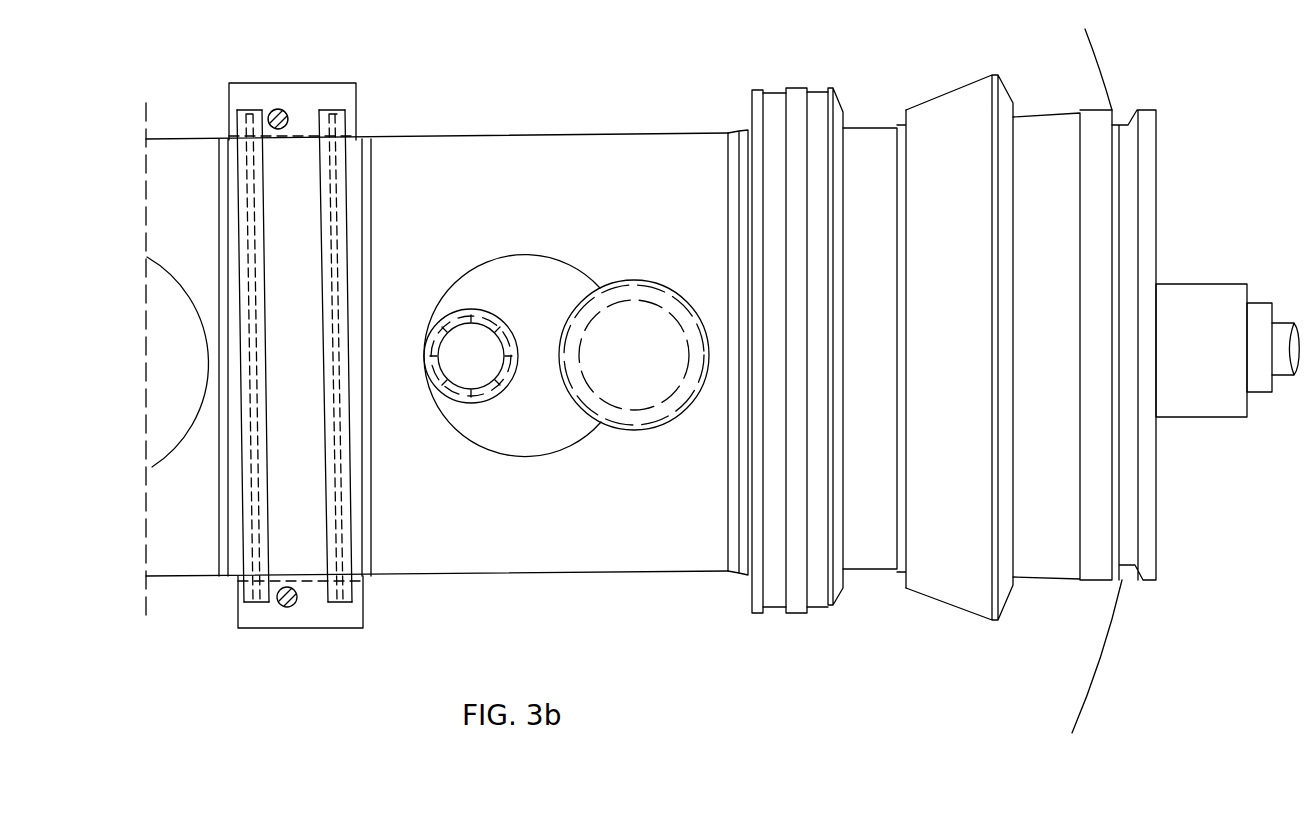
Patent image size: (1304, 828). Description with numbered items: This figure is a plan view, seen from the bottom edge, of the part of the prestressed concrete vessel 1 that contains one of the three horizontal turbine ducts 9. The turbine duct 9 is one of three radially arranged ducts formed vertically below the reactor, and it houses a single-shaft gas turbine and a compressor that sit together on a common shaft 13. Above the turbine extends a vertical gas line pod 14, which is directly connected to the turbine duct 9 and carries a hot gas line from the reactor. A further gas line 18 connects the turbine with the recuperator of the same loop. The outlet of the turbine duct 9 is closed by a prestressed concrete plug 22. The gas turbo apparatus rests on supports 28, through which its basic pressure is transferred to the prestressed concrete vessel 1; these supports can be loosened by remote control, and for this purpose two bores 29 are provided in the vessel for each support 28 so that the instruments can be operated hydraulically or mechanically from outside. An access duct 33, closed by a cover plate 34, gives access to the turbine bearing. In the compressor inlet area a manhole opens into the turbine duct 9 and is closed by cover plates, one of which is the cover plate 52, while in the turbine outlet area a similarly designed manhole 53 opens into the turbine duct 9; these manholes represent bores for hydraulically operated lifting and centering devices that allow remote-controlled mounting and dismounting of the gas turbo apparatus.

The prestressed concrete vessel 1 is at (1100, 673).
The turbine duct 9 is at (516, 185).
The common shaft 13 is at (1280, 367).
The gas line pod 14 is at (160, 258).
The gas line 18 is at (570, 267).
The prestressed concrete plug 22 is at (1067, 265).
The support 28 is at (325, 612).
The bore 29 is at (287, 607).
The access duct 33 is at (645, 300).
The cover plate 34 is at (678, 412).
The cover plate 52 is at (497, 395).
The manhole 53 is at (467, 390).